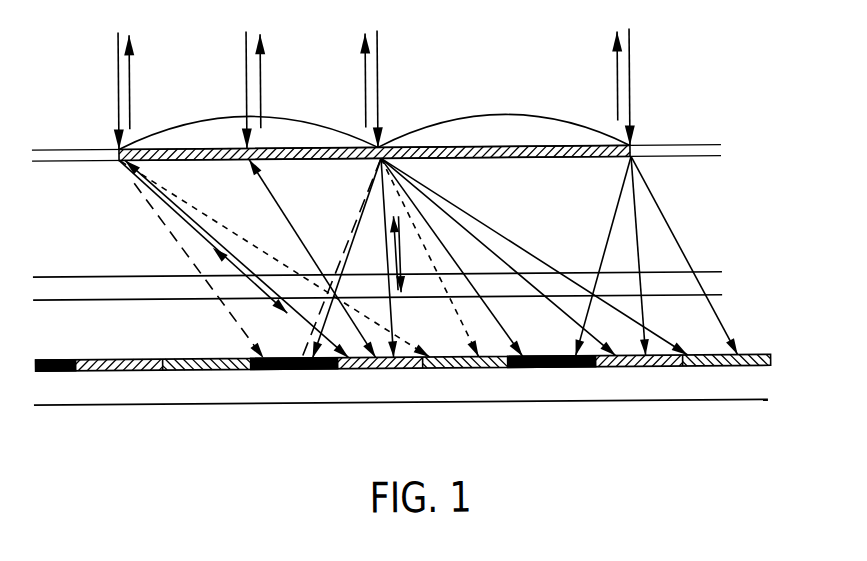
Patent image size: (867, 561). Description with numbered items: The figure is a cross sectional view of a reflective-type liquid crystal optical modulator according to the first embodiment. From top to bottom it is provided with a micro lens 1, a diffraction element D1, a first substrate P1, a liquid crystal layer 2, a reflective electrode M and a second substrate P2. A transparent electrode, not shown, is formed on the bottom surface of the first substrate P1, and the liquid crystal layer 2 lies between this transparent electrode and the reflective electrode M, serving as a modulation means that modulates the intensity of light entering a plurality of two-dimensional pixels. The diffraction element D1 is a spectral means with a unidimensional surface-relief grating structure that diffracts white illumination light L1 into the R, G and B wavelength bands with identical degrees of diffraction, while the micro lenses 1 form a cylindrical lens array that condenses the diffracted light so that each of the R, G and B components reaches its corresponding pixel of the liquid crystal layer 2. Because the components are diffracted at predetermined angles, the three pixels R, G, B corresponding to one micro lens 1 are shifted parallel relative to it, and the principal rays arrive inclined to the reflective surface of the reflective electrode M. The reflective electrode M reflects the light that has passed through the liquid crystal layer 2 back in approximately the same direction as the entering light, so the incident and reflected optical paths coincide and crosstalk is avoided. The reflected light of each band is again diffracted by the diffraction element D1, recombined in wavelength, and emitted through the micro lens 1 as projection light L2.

The micro lens 1 is at (205, 126).
The liquid crystal layer 2 is at (738, 327).
The diffraction element D1 is at (724, 151).
The illumination light L1 is at (118, 58).
The projection light L2 is at (127, 91).
The first substrate P1 is at (724, 287).
The second substrate P2 is at (747, 386).
The reflective electrode M is at (436, 374).
The B light component B is at (316, 379).
The G light component G is at (510, 377).
The R light component R is at (597, 376).